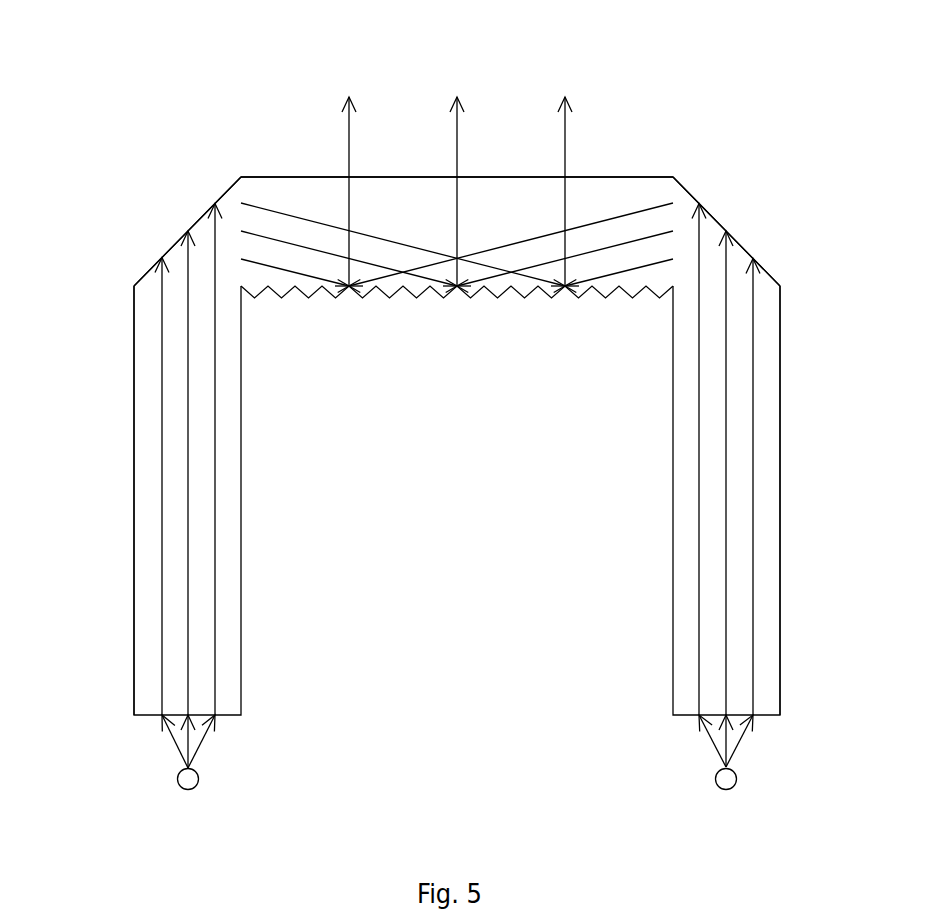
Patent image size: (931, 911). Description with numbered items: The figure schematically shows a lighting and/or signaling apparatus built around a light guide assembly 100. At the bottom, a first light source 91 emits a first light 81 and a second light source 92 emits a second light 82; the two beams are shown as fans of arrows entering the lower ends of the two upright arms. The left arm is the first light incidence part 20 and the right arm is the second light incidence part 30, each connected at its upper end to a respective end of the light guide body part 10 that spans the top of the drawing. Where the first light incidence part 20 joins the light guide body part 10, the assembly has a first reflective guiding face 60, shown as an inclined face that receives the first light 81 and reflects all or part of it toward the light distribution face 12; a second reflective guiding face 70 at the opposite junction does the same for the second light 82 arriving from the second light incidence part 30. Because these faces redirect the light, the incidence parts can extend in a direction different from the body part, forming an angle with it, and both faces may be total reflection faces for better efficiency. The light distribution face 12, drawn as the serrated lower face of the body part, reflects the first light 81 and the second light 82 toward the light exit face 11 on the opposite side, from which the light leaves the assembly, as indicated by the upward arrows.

The light guide assembly 100 is at (698, 117).
The light guide body part 10 is at (430, 232).
The light exit face 11 is at (297, 177).
The light distribution face 12 is at (463, 290).
The first light incidence part 20 is at (133, 473).
The second light incidence part 30 is at (780, 473).
The first reflective guiding face 60 is at (177, 242).
The second reflective guiding face 70 is at (740, 242).
The first light 81 is at (176, 747).
The second light 82 is at (713, 747).
The first light source 91 is at (198, 785).
The second light source 92 is at (737, 783).